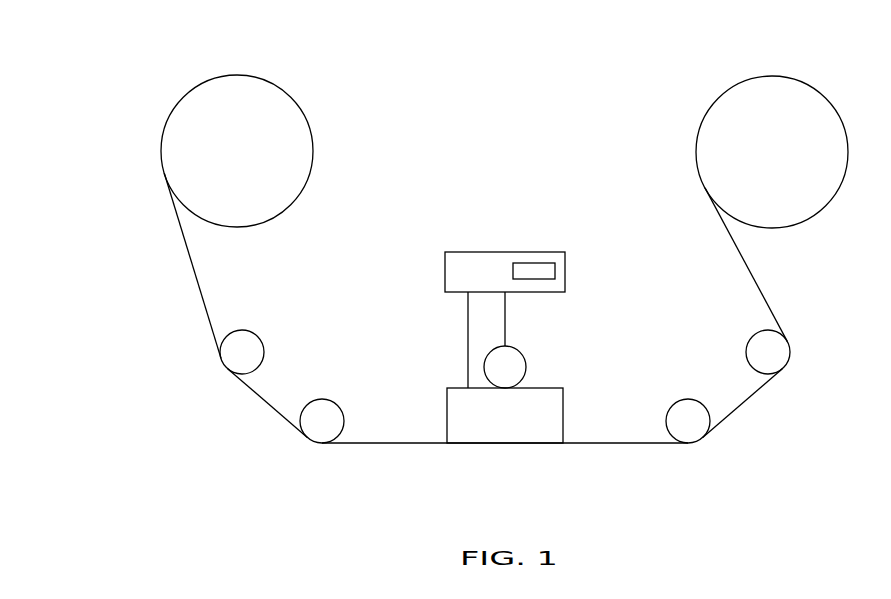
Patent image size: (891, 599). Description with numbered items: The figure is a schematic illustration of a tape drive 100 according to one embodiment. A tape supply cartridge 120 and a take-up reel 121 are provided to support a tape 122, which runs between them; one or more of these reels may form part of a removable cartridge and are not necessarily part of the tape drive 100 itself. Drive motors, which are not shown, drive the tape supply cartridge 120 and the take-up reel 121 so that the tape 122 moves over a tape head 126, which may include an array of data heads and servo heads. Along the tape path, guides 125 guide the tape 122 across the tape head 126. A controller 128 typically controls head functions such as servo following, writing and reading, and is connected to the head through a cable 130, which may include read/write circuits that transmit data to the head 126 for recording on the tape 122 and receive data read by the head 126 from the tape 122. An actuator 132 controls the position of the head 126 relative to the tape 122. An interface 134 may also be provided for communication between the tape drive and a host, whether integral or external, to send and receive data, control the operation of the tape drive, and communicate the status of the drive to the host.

The tape drive 100 is at (172, 72).
The tape supply cartridge 120 is at (298, 107).
The take-up reel 121 is at (728, 93).
The tape 122 is at (200, 285).
The guides 125 is at (265, 345).
The tape head 126 is at (447, 407).
The controller 128 is at (477, 252).
The cable 130 is at (468, 337).
The actuator 132 is at (527, 368).
The interface 134 is at (532, 263).